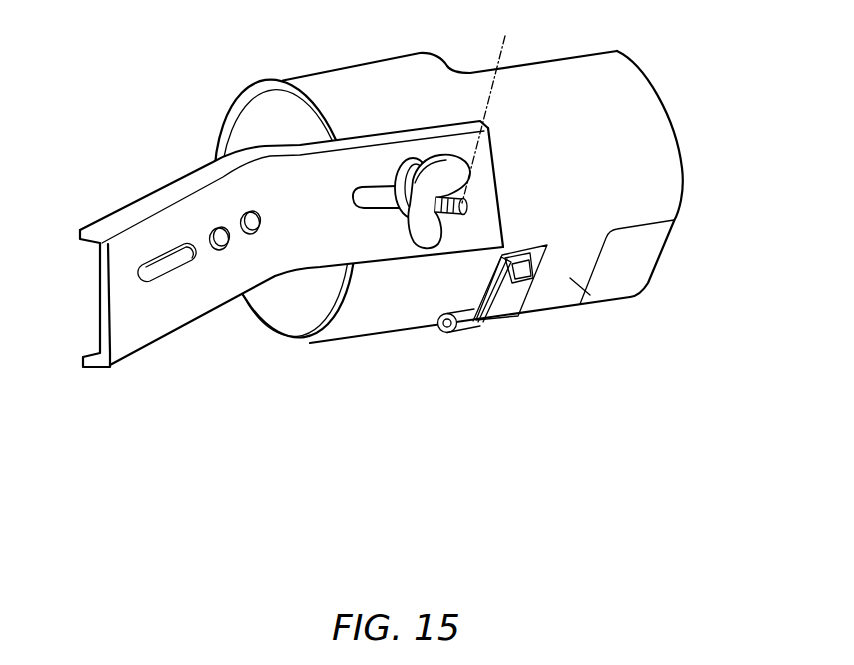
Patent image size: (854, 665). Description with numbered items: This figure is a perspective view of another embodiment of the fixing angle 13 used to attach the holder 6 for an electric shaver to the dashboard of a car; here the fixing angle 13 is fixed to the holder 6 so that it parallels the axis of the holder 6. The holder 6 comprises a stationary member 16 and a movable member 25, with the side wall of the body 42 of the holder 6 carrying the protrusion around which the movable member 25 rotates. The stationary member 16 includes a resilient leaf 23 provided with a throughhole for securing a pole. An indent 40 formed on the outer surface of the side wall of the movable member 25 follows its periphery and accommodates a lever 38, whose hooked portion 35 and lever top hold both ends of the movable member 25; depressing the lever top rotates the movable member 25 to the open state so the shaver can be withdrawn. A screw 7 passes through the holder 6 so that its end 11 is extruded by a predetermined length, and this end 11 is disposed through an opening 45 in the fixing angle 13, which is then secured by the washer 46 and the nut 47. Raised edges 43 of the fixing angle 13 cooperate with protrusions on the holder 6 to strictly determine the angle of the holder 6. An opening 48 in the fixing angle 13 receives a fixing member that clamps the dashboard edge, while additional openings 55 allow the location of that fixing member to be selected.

The stationary member 16 is at (650, 137).
The body 42 is at (237, 132).
The holder 6 is at (352, 318).
The resilient leaf 23 is at (604, 303).
The movable member 25 is at (647, 272).
The indent 40 is at (517, 320).
The hooked portion 35 is at (519, 272).
The lever 38 is at (490, 328).
The fixing angle 13 is at (117, 218).
The raised edges 43 is at (80, 238).
The opening 48 is at (152, 272).
The additional openings 55 is at (214, 250).
The opening 45 is at (380, 204).
The washer 46 is at (402, 220).
The nut 47 is at (430, 250).
The end of the screw 11 is at (452, 215).
The screw 7 is at (488, 107).